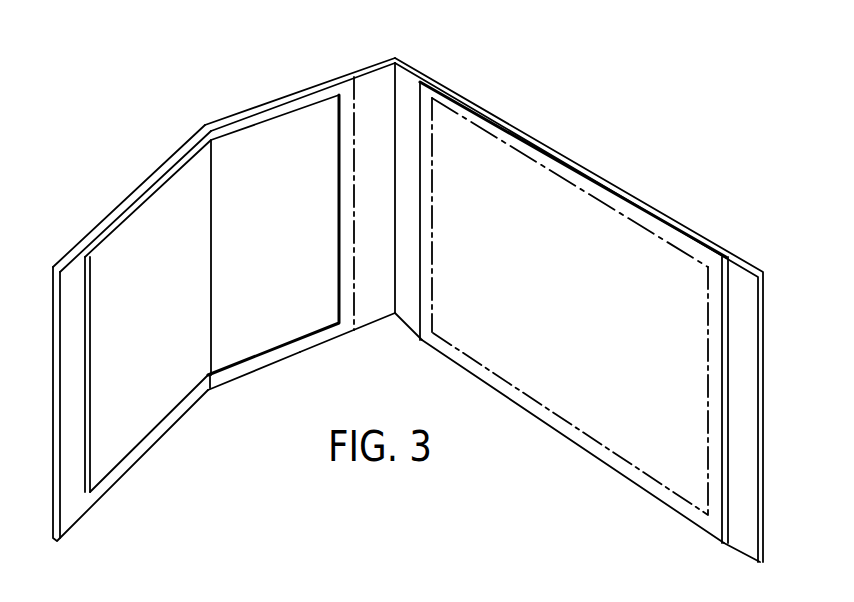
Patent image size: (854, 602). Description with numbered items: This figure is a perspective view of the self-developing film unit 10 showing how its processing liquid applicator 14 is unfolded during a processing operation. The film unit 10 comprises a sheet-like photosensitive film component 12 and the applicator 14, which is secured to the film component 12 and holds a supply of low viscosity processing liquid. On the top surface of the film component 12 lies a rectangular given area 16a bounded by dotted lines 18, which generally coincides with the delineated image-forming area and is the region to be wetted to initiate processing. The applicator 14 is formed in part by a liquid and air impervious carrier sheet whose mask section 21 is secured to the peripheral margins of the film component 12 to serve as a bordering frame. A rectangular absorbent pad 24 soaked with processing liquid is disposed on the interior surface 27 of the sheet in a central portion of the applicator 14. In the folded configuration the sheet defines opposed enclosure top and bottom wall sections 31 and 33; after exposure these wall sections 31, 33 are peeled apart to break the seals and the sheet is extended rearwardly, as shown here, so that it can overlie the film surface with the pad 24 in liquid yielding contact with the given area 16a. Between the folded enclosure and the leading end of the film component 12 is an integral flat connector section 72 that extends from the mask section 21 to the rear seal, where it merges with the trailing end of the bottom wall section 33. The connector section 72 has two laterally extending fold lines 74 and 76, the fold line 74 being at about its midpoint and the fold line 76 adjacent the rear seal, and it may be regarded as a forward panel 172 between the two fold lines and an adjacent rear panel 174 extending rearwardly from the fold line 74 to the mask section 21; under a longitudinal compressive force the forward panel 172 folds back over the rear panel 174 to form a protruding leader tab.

The film unit 10 is at (637, 135).
The photosensitive film component 12 is at (675, 225).
The processing liquid applicator 14 is at (275, 398).
The rectangular area 16a is at (572, 299).
The dotted lines 18 is at (496, 136).
The mask section 21 is at (546, 152).
The absorbent pad 24 is at (248, 134).
The interior surface 27 is at (193, 402).
The enclosure top wall section 31 is at (152, 173).
The enclosure bottom wall section 33 is at (306, 86).
The connector section 72 is at (352, 64).
The fold line 74 is at (395, 118).
The fold line 76 is at (355, 185).
The forward panel 172 is at (367, 315).
The rear panel 174 is at (414, 316).